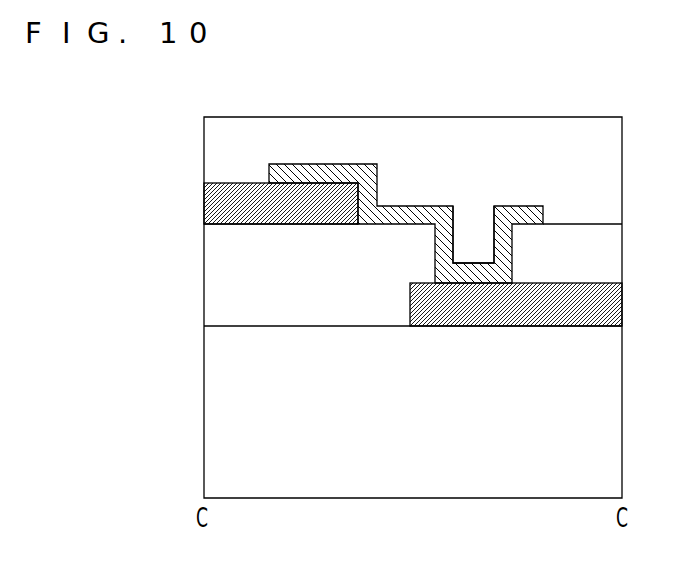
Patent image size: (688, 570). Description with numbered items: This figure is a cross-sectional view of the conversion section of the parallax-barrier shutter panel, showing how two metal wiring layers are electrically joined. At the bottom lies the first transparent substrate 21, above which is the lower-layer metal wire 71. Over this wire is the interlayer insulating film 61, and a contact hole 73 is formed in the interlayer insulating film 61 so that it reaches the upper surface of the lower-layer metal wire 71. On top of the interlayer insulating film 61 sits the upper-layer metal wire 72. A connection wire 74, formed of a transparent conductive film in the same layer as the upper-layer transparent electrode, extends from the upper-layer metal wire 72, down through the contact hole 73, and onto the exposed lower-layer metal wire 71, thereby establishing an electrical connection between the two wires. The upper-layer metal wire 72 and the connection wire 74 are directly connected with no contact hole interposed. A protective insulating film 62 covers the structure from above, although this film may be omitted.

The first transparent substrate 21 is at (604, 432).
The interlayer insulating film 61 is at (604, 248).
The protective insulating film 62 is at (604, 148).
The lower-layer metal wire 71 is at (622, 296).
The upper-layer metal wire 72 is at (212, 210).
The contact hole 73 is at (474, 252).
The connection wire 74 is at (333, 172).